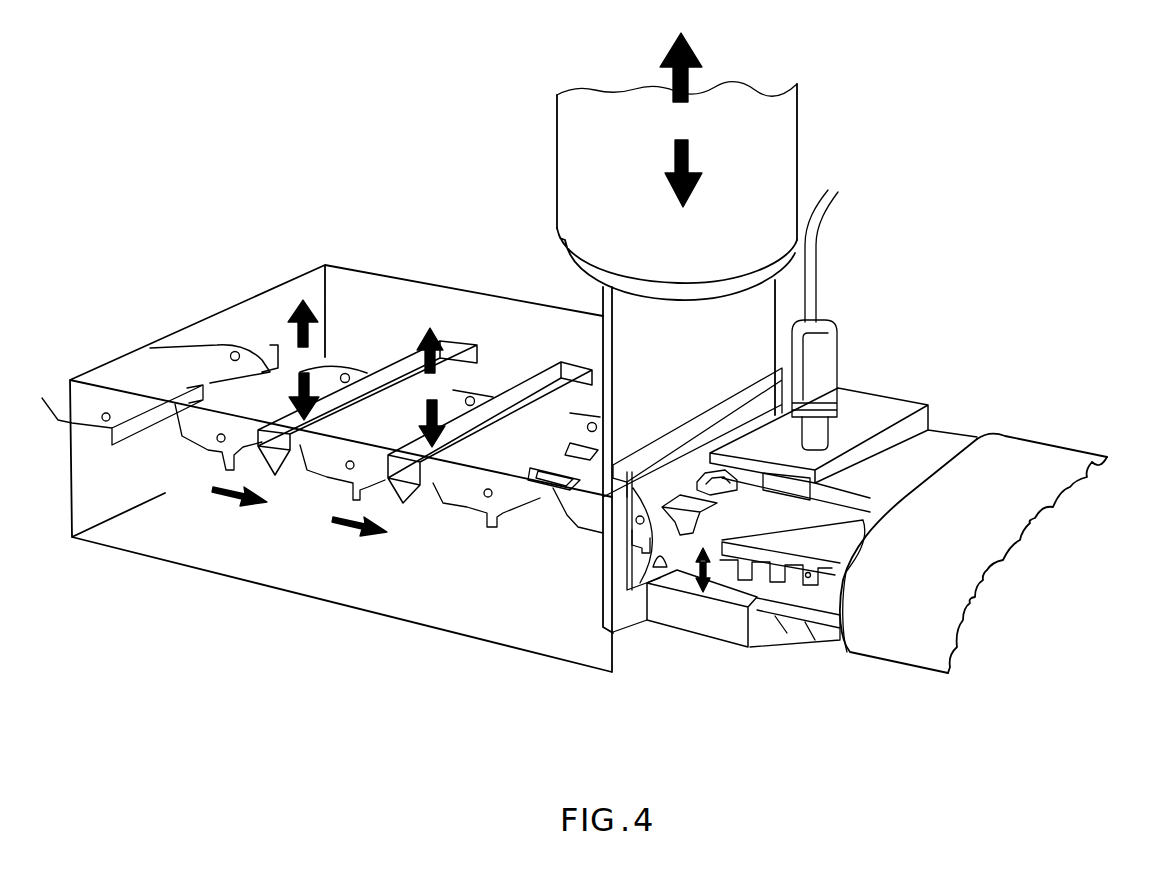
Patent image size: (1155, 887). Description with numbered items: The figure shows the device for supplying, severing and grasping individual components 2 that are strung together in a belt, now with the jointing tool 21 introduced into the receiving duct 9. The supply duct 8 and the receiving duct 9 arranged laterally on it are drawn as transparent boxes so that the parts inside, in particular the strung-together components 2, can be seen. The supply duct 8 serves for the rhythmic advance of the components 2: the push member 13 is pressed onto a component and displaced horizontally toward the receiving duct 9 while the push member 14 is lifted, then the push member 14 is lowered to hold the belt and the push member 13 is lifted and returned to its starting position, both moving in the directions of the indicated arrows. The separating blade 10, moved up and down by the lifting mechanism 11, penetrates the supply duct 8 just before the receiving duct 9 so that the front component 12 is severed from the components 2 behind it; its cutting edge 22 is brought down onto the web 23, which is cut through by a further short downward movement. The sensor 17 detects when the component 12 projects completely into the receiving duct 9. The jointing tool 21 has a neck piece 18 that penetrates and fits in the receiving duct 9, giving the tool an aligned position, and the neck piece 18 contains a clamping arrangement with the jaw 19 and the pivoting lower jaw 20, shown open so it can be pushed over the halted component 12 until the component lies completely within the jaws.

The components 2 is at (465, 485).
The supply duct 8 is at (315, 580).
The receiving duct 9 is at (892, 400).
The separating blade 10 is at (625, 322).
The lifting mechanism 11 is at (790, 97).
The component 12 is at (717, 527).
The push member 13 is at (398, 372).
The push member 14 is at (525, 388).
The sensor 17 is at (837, 330).
The neck piece 18 is at (943, 443).
The jaw 19 is at (790, 560).
The jaw 20 is at (770, 597).
The jointing tool 21 is at (1053, 467).
The cutting edge 22 is at (640, 613).
The web 23 is at (697, 493).